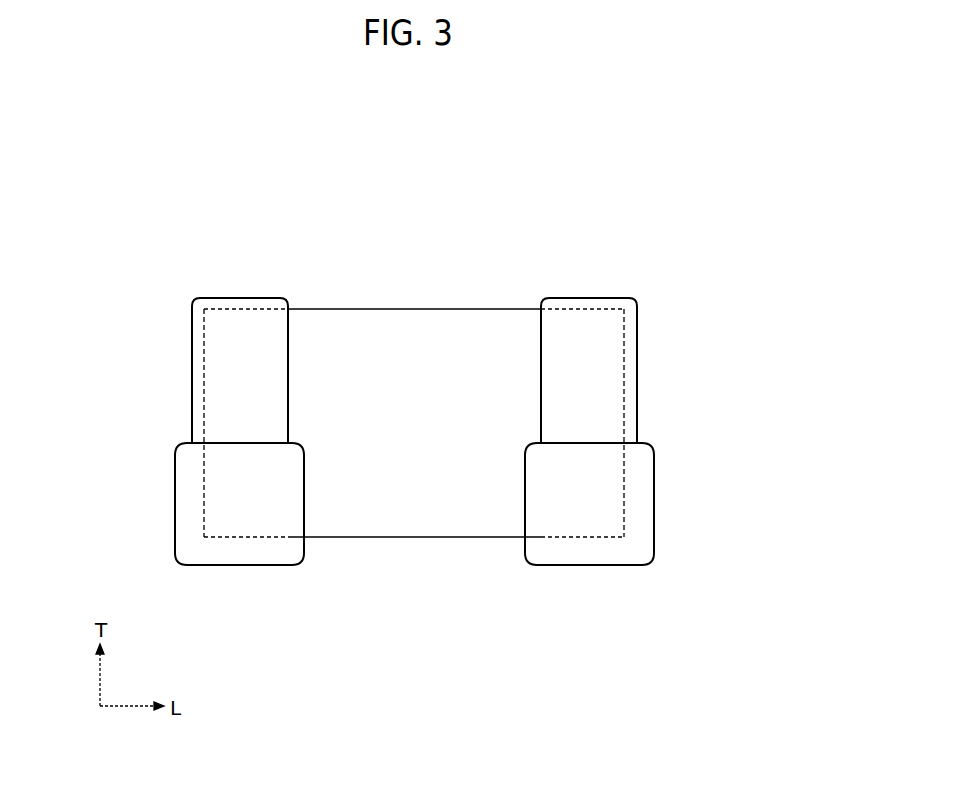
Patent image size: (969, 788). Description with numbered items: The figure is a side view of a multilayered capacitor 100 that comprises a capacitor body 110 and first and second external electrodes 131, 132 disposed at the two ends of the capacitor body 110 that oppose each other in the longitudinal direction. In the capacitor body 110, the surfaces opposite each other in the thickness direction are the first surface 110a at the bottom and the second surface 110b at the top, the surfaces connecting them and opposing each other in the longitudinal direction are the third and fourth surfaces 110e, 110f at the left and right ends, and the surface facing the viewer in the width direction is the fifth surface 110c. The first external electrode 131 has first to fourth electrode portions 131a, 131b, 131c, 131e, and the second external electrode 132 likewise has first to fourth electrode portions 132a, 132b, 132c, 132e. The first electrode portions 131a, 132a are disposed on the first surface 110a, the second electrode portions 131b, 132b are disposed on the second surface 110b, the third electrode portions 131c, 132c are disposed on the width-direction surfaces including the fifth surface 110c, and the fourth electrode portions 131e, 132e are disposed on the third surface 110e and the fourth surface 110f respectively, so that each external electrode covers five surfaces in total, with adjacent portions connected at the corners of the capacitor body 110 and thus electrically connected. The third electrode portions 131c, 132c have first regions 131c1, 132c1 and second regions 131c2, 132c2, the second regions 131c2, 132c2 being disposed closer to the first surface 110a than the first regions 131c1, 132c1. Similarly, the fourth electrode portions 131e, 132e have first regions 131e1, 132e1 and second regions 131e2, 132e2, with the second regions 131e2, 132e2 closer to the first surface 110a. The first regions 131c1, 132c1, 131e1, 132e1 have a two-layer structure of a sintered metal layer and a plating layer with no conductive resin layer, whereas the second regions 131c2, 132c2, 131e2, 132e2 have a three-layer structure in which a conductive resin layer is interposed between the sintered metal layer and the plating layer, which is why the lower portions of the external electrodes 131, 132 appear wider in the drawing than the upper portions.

The multilayered capacitor 100 is at (633, 266).
The capacitor body 110 is at (382, 539).
The first surface 110a is at (413, 540).
The second surface 110b is at (448, 309).
The fifth surface 110c is at (375, 309).
The third surface 110e is at (204, 355).
The fourth surface 110f is at (625, 354).
The first external electrode 131 is at (195, 300).
The first electrode portion 131a is at (238, 565).
The second electrode portion 131b is at (243, 298).
The third electrode portion 131c is at (365, 465).
The first region 131c1 is at (288, 368).
The second region 131c2 is at (303, 458).
The fourth electrode portion 131e is at (100, 428).
The first region 131e1 is at (198, 428).
The second region 131e2 is at (176, 512).
The second external electrode 132 is at (636, 303).
The first electrode portion 132a is at (588, 565).
The second electrode portion 132b is at (583, 298).
The third electrode portion 132c is at (463, 395).
The first region 132c1 is at (541, 395).
The second region 132c2 is at (525, 488).
The fourth electrode portion 132e is at (722, 428).
The first region 132e1 is at (637, 430).
The second region 132e2 is at (655, 462).